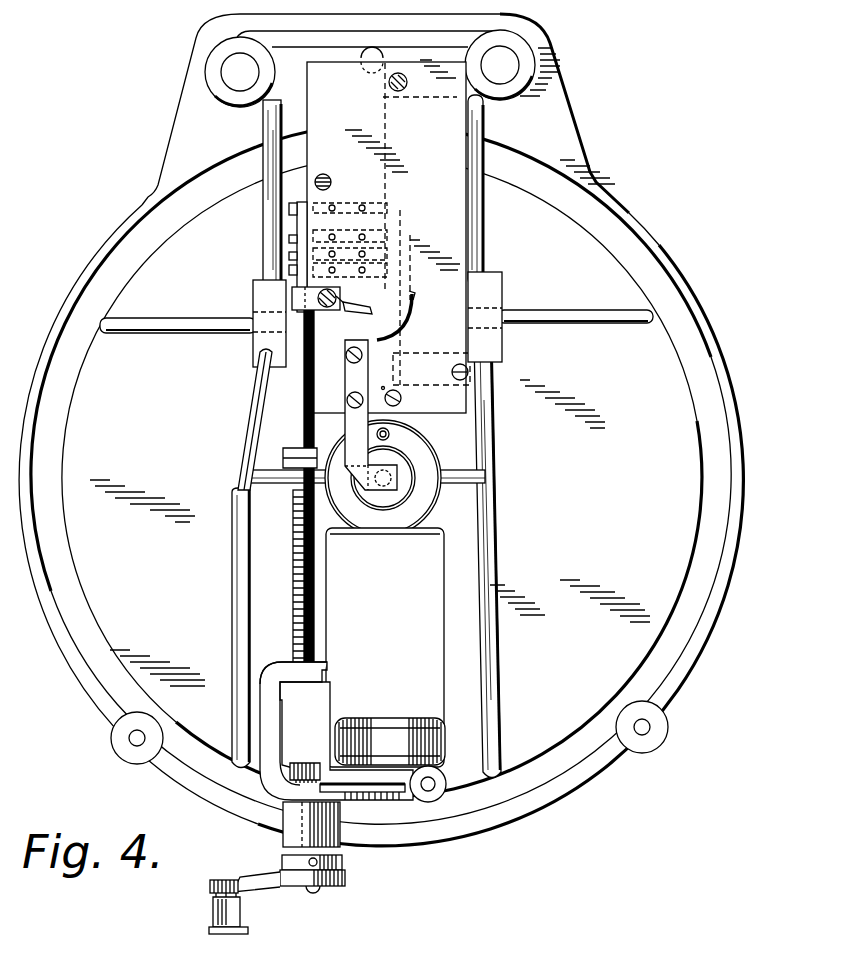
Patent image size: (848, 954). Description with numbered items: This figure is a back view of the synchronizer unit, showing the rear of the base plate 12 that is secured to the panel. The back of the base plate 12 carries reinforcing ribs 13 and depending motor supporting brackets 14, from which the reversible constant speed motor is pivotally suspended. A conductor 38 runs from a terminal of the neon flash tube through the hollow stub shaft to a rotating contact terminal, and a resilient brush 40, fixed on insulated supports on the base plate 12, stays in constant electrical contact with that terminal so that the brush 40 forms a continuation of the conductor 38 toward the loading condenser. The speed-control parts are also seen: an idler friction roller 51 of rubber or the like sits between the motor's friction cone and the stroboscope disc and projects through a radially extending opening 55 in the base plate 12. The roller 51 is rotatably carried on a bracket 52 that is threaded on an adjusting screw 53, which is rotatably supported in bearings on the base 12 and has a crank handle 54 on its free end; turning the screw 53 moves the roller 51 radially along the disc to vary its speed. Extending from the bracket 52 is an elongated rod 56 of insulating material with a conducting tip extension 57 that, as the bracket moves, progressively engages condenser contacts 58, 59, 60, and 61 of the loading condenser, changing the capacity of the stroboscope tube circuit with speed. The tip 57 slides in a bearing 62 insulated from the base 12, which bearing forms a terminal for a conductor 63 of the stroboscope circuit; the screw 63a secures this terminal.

The base plate 12 is at (123, 615).
The reinforcing ribs 13 is at (180, 326).
The motor supporting brackets 14 is at (262, 298).
The conductor 38 is at (404, 322).
The resilient brush 40 is at (349, 432).
The idler friction roller 51 is at (447, 737).
The bracket 52 is at (347, 796).
The adjusting screw 53 is at (298, 603).
The crank handle 54 is at (260, 892).
The radially extending opening 55 is at (434, 633).
The elongated rod 56 is at (303, 420).
The tip extension 57 is at (300, 222).
The condenser contact 58 is at (290, 268).
The condenser contact 59 is at (290, 255).
The condenser contact 60 is at (290, 238).
The condenser contact 61 is at (290, 208).
The bearing 62 is at (313, 310).
The conductor 63 is at (358, 307).
The terminal screw 63a is at (332, 182).